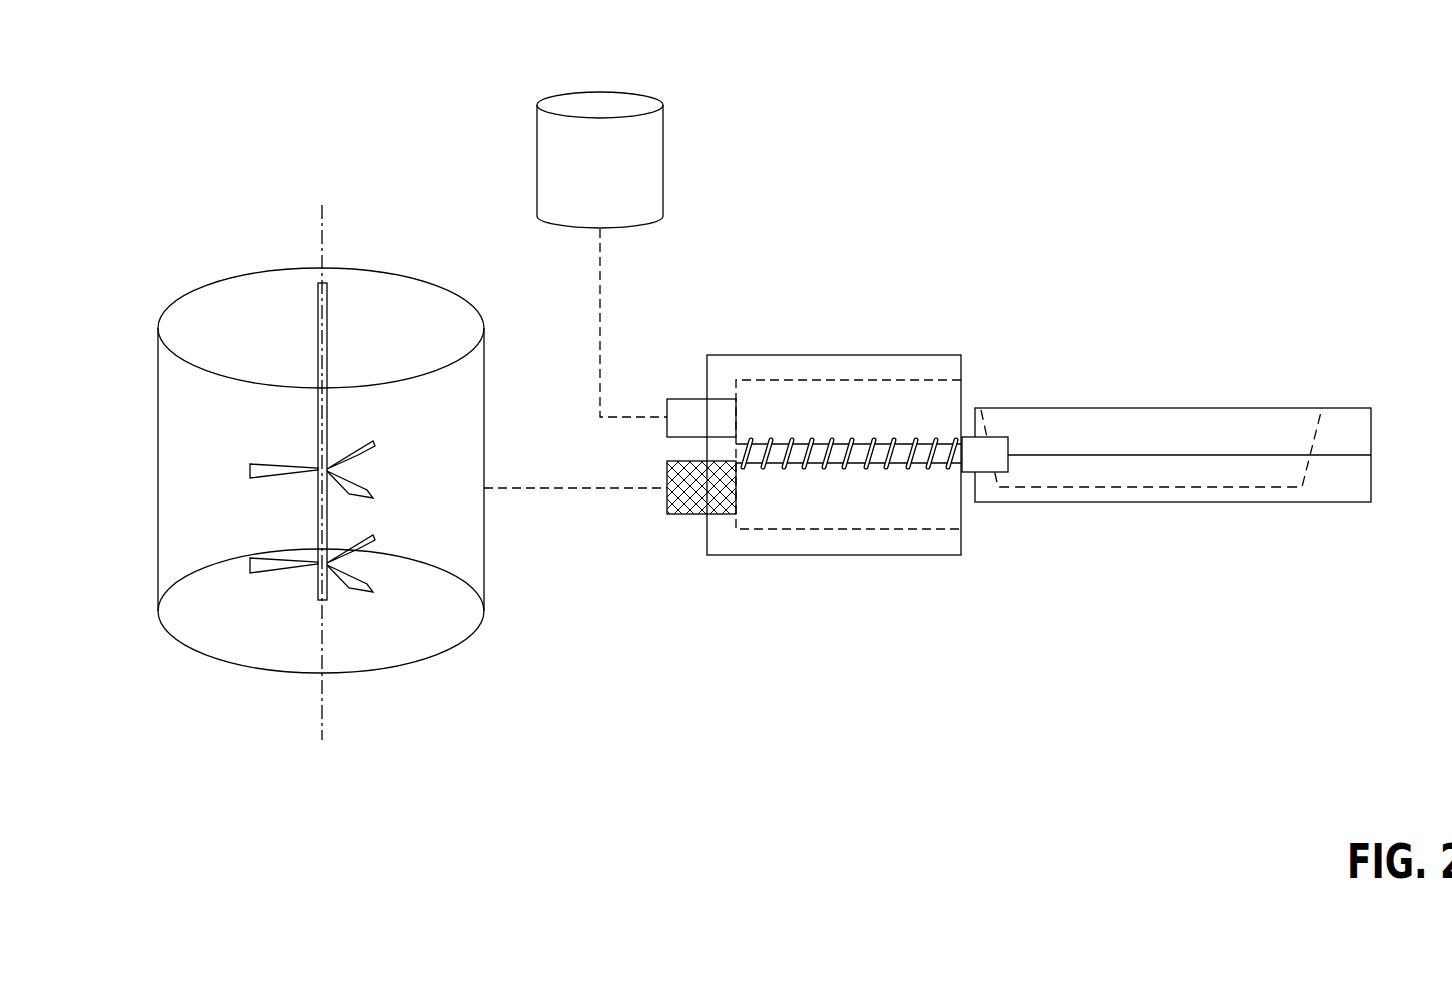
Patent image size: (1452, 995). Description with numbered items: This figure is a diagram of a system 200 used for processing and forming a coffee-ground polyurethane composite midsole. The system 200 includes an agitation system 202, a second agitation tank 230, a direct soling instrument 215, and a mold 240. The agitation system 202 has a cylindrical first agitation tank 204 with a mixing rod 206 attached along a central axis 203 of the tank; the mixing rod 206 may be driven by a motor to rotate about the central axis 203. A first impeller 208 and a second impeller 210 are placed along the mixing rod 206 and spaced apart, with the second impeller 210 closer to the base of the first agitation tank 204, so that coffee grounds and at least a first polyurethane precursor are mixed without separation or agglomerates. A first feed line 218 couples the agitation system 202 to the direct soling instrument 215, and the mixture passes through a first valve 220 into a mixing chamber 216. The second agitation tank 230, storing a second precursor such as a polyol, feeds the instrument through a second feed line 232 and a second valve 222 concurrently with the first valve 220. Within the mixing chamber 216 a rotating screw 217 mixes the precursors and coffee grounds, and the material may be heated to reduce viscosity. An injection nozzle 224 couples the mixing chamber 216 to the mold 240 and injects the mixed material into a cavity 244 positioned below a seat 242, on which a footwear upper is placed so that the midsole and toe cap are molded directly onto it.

The system 200 is at (1290, 51).
The agitation system 202 is at (182, 263).
The central axis 203 is at (323, 245).
The first agitation tank 204 is at (158, 524).
The mixing rod 206 is at (330, 334).
The first impeller 208 is at (360, 450).
The second impeller 210 is at (290, 572).
The direct soling instrument 215 is at (774, 272).
The mixing chamber 216 is at (838, 380).
The rotating screw 217 is at (876, 444).
The first feed line 218 is at (578, 490).
The first valve 220 is at (690, 515).
The second valve 222 is at (697, 398).
The injection nozzle 224 is at (983, 473).
The second agitation tank 230 is at (617, 180).
The second feed line 232 is at (602, 310).
The mold 240 is at (1326, 378).
The seat 242 is at (1130, 413).
The cavity 244 is at (1170, 492).